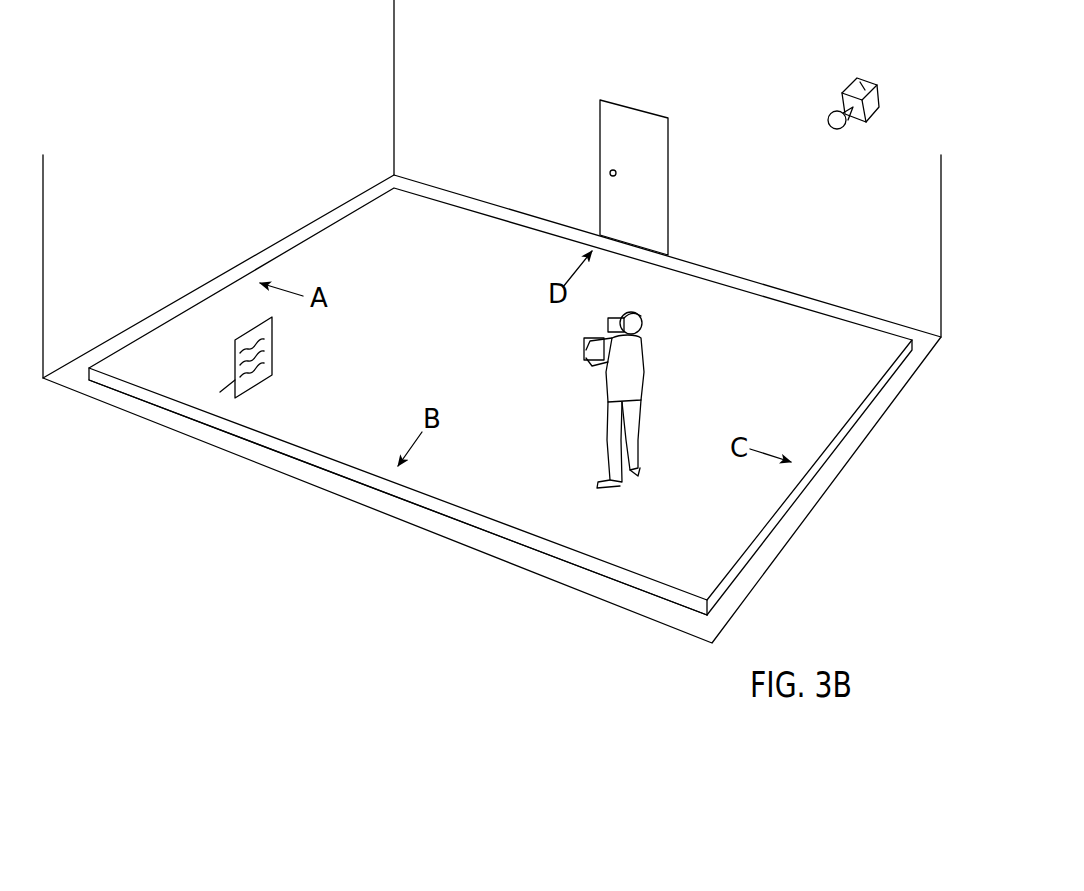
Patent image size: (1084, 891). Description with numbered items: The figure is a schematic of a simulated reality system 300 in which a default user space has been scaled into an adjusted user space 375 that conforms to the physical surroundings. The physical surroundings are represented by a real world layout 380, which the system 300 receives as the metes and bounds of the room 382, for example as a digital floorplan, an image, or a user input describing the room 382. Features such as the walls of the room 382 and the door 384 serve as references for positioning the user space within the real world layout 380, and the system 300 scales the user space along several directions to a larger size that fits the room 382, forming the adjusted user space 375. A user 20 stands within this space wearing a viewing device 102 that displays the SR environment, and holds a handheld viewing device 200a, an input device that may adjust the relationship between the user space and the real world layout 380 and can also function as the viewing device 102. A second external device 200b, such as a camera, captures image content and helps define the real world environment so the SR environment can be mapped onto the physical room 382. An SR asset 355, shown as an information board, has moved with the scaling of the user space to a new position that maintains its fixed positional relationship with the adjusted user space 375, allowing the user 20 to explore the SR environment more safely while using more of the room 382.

The simulated reality system 300 is at (216, 490).
The adjusted user space 375 is at (598, 538).
The real world layout 380 is at (948, 350).
The room 382 is at (433, 525).
The door 384 is at (633, 132).
The external device 200b is at (868, 80).
The user 20 is at (622, 370).
The viewing device 102 is at (610, 318).
The handheld viewing device 200a is at (584, 338).
The asset 355 is at (232, 352).